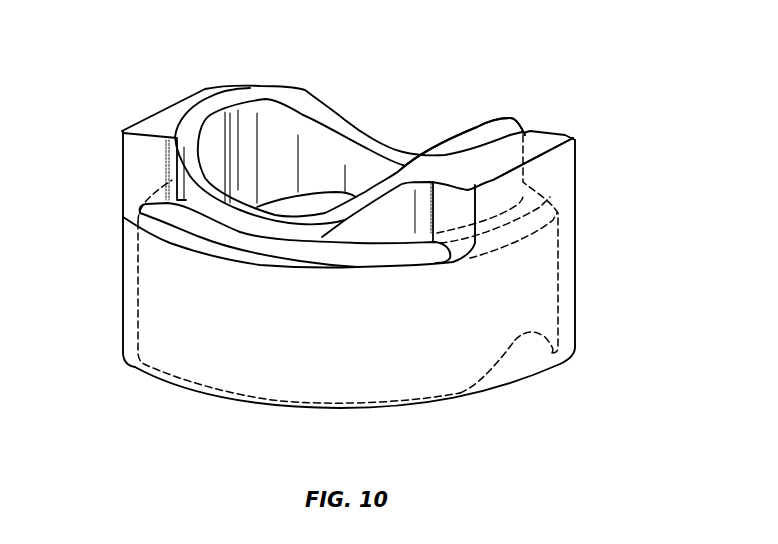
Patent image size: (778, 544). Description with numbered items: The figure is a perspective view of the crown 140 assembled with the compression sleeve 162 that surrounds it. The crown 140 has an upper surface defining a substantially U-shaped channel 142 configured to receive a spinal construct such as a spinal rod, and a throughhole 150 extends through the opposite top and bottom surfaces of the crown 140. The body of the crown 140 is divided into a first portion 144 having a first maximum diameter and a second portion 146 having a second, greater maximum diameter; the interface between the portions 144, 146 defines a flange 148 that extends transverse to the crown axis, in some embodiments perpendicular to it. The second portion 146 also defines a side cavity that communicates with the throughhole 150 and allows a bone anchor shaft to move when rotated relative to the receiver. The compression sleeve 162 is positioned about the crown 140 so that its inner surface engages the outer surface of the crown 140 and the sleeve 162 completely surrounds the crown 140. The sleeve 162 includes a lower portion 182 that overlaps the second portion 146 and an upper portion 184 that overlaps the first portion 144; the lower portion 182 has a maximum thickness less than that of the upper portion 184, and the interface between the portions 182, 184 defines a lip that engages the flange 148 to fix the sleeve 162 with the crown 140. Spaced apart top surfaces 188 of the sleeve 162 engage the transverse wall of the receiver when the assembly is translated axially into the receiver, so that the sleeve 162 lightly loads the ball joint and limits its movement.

The crown 140 is at (275, 87).
The channel 142 is at (386, 134).
The first portion of crown 144 is at (209, 112).
The second portion of crown 146 is at (233, 340).
The flange 148 is at (195, 230).
The throughhole 150 is at (315, 172).
The compression sleeve 162 is at (557, 173).
The lower portion of sleeve 182 is at (523, 365).
The upper portion of sleeve 184 is at (557, 132).
The top surfaces of sleeve 188 is at (203, 92).